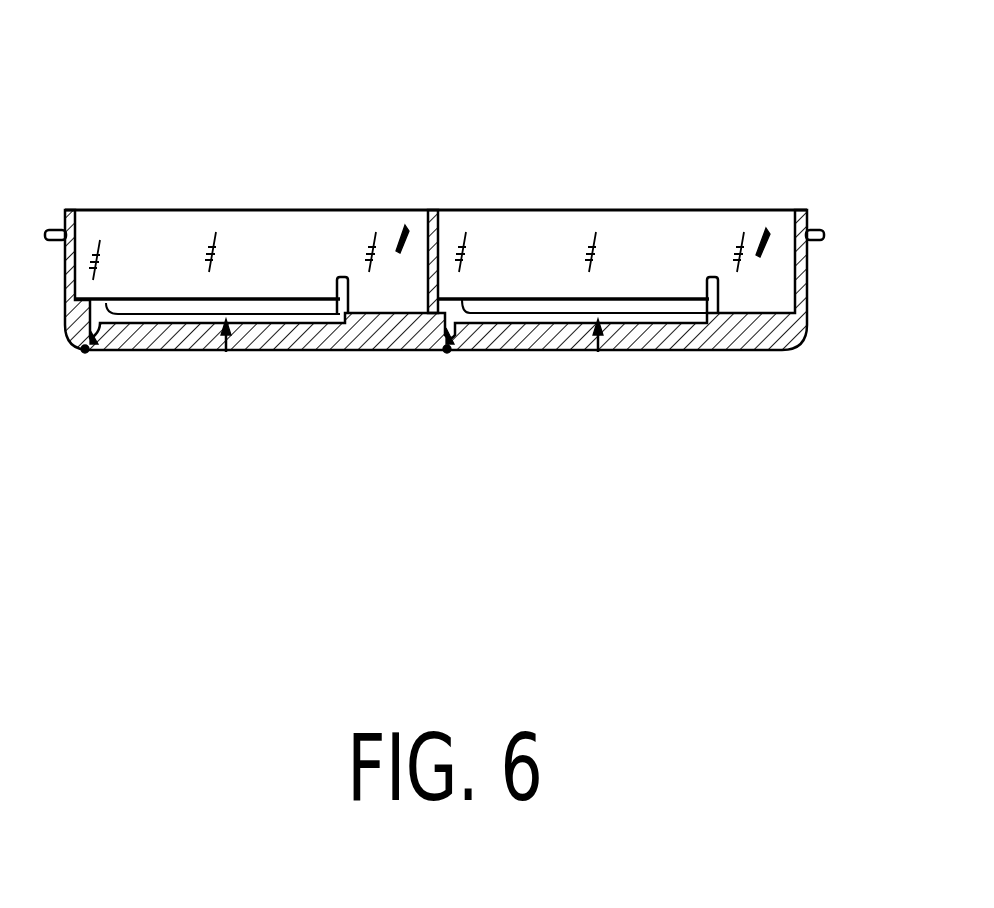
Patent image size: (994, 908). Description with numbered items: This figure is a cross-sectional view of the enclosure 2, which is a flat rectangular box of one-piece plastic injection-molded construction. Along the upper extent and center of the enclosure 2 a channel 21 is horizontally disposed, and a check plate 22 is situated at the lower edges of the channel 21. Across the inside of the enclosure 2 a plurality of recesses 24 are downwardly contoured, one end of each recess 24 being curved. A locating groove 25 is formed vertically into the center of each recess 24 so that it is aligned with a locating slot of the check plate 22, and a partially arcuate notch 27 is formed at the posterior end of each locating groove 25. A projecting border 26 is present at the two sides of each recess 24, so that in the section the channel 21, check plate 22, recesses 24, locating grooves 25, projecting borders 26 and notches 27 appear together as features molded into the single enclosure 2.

The enclosure 2 is at (328, 352).
The channel 21 is at (405, 225).
The check plate 22 is at (342, 278).
The recess 24 is at (278, 300).
The locating groove 25 is at (226, 352).
The projecting border 26 is at (155, 300).
The partially arcuate notch 27 is at (85, 352).